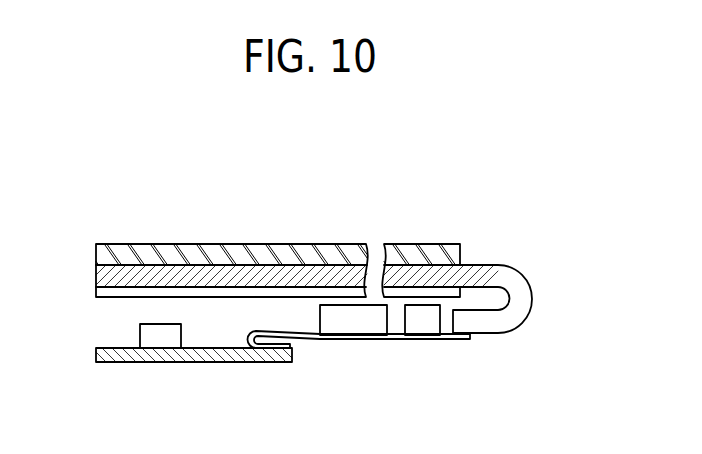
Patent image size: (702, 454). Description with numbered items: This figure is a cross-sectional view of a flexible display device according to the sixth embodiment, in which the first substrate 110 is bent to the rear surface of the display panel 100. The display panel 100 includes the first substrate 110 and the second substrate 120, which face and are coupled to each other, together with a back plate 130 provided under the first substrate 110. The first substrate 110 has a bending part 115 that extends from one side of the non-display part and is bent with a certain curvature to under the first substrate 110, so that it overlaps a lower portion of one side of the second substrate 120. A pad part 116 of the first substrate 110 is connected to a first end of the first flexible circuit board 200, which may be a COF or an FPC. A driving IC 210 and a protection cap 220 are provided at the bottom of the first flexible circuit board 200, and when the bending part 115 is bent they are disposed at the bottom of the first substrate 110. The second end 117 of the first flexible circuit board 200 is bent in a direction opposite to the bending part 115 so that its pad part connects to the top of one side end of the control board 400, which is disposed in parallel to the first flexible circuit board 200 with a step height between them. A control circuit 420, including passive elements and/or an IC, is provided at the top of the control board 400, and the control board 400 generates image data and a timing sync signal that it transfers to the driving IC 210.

The display panel 100 is at (287, 183).
The first substrate 110 is at (176, 279).
The second substrate 120 is at (225, 262).
The back plate 130 is at (271, 294).
The bending part 115 is at (535, 288).
The pad part 116 is at (460, 338).
The second end 117 is at (248, 346).
The first flexible circuit board 200 is at (322, 337).
The driving IC 210 is at (418, 320).
The protection cap 220 is at (347, 320).
The control board 400 is at (104, 356).
The control circuit 420 is at (158, 340).